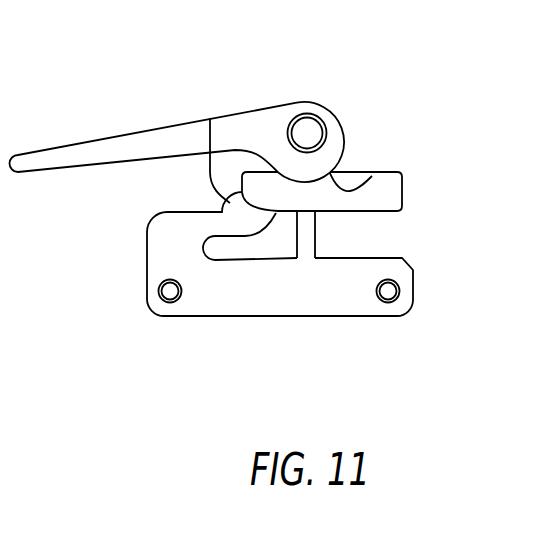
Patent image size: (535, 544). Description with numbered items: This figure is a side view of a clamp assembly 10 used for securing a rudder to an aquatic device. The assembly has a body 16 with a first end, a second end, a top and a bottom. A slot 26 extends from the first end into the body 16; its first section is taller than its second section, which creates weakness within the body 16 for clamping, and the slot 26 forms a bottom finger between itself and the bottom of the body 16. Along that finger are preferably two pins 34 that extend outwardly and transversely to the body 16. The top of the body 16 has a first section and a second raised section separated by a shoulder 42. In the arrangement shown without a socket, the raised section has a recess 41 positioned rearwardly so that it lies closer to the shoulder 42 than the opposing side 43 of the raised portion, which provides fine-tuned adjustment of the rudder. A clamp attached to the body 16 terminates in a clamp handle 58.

The clamp assembly 10 is at (108, 350).
The body 16 is at (167, 211).
The slot 26 is at (375, 235).
The pins 34 is at (171, 293).
The recess 41 is at (372, 176).
The shoulder 42 is at (210, 118).
The opposing side 43 is at (403, 185).
The clamp handle 58 is at (113, 135).